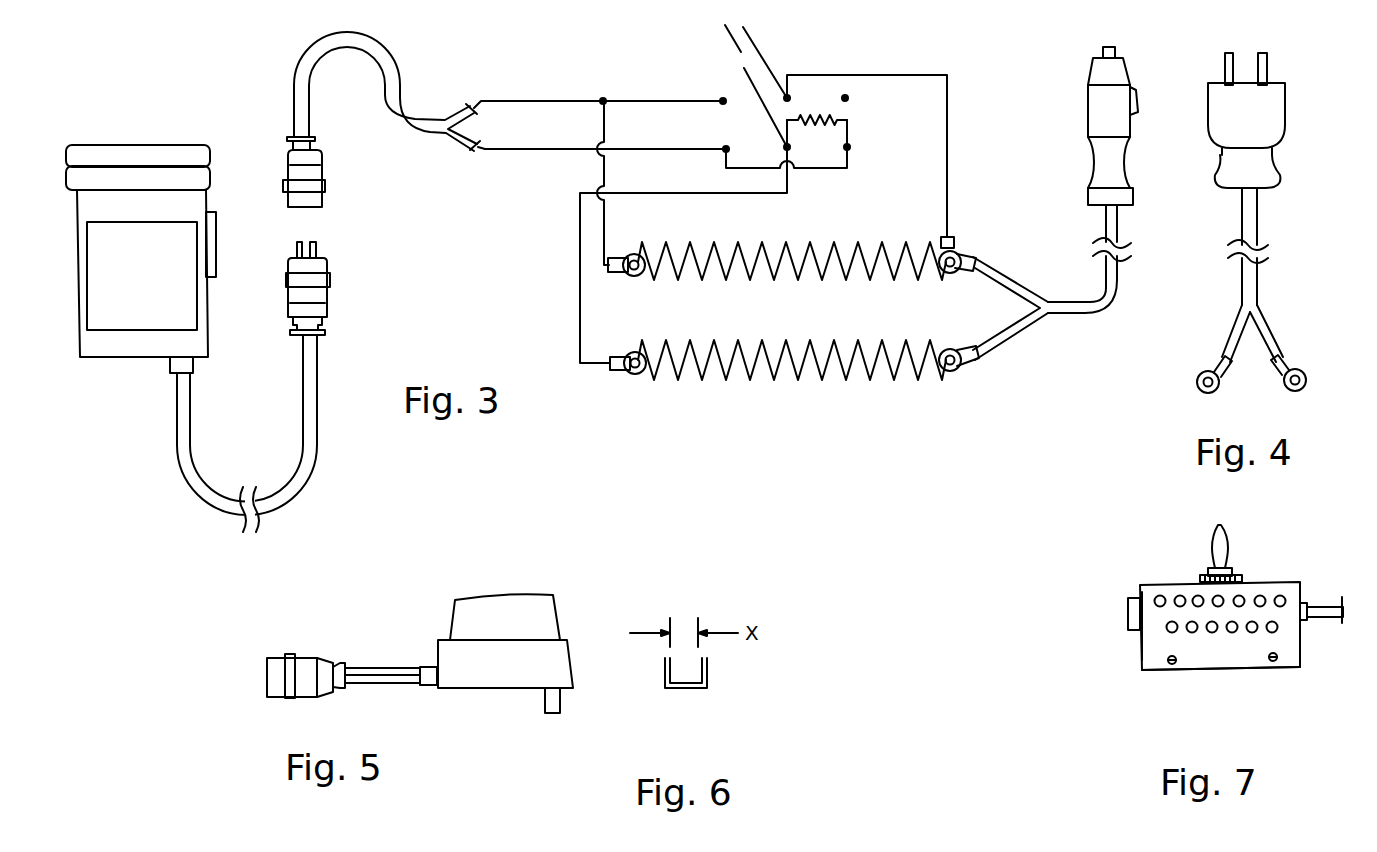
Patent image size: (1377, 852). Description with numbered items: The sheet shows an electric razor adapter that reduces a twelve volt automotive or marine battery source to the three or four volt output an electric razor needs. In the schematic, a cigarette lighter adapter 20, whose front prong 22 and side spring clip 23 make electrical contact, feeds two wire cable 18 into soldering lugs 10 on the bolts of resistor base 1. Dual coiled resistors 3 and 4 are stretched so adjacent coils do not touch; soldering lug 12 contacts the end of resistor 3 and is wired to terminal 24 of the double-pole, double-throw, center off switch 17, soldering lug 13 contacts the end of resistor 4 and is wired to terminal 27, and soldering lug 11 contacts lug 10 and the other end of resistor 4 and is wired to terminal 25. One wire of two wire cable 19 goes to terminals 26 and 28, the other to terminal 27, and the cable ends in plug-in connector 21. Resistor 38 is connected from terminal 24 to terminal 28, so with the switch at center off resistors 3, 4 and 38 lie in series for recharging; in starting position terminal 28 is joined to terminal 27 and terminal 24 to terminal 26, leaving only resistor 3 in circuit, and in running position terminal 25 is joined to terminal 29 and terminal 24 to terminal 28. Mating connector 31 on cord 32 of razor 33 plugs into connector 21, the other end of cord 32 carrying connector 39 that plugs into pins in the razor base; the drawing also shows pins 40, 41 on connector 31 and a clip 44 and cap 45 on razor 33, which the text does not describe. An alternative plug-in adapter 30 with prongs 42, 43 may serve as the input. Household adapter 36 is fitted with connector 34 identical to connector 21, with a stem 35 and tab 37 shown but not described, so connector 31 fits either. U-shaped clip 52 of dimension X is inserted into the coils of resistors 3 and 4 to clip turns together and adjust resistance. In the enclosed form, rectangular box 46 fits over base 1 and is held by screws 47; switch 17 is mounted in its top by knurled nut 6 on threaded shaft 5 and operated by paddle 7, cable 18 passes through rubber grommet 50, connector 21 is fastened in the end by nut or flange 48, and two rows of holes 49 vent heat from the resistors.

In FIG. 7, the resistor base 1 is at (1198, 670).
In FIG. 3, the resistor 3 is at (743, 378).
In FIG. 3, the resistor 4 is at (785, 250).
In FIG. 7, the mounting shaft 5 is at (1203, 575).
In FIG. 7, the knurled nut 6 is at (1243, 578).
In FIG. 3, the paddle 7 is at (727, 28).
In FIG. 7, the paddle 7 is at (1213, 550).
In FIG. 3, the soldering lugs 10 is at (958, 338).
In FIG. 4, the soldering lugs 10 is at (1220, 378).
In FIG. 3, the soldering lug 11 is at (958, 243).
In FIG. 3, the soldering lug 12 is at (626, 353).
In FIG. 3, the soldering lug 13 is at (616, 273).
In FIG. 3, the switch 17 is at (760, 55).
In FIG. 3, the two wire cable 18 is at (1100, 282).
In FIG. 4, the two wire cable 18 is at (1237, 300).
In FIG. 7, the two wire cable 18 is at (1313, 608).
In FIG. 3, the two wire cable 19 is at (378, 58).
In FIG. 3, the cigarette lighter plug-in adapter 20 is at (1088, 112).
In FIG. 3, the plug-in connector 21 is at (324, 198).
In FIG. 7, the plug-in connector 21 is at (1128, 607).
In FIG. 3, the front prong 22 is at (1102, 50).
In FIG. 3, the side spring clip 23 is at (1134, 113).
In FIG. 3, the terminal 24 is at (792, 148).
In FIG. 3, the terminal 25 is at (792, 98).
In FIG. 3, the terminal 26 is at (729, 150).
In FIG. 3, the terminal 27 is at (721, 103).
In FIG. 3, the terminal 28 is at (849, 147).
In FIG. 3, the terminal 29 is at (847, 98).
In FIG. 4, the adapter 30 is at (1208, 123).
In FIG. 3, the plug-in connector 31 is at (328, 290).
In FIG. 3, the cord 32 is at (303, 397).
In FIG. 3, the razor 33 is at (207, 304).
In FIG. 5, the plug-in connector 34 is at (303, 658).
In FIG. 5, the shaft 35 is at (385, 668).
In FIG. 5, the household adapter 36 is at (505, 594).
In FIG. 5, the mounting tab 37 is at (543, 695).
In FIG. 3, the resistor 38 is at (836, 120).
In FIG. 3, the plug-in connector 39 is at (170, 368).
In FIG. 3, the plug prong 40 is at (297, 250).
In FIG. 3, the plug prong 41 is at (316, 250).
In FIG. 4, the wall plug prong 42 is at (1226, 64).
In FIG. 4, the wall plug prong 43 is at (1267, 63).
In FIG. 3, the belt clip 44 is at (215, 227).
In FIG. 3, the battery cap 45 is at (190, 143).
In FIG. 7, the rectangular box 46 is at (1152, 582).
In FIG. 7, the screws 47 is at (1172, 668).
In FIG. 7, the nut or flange 48 is at (1139, 637).
In FIG. 7, the holes 49 is at (1276, 628).
In FIG. 7, the rubber grommet 50 is at (1308, 618).
In FIG. 6, the U-shaped clips 52 is at (692, 688).